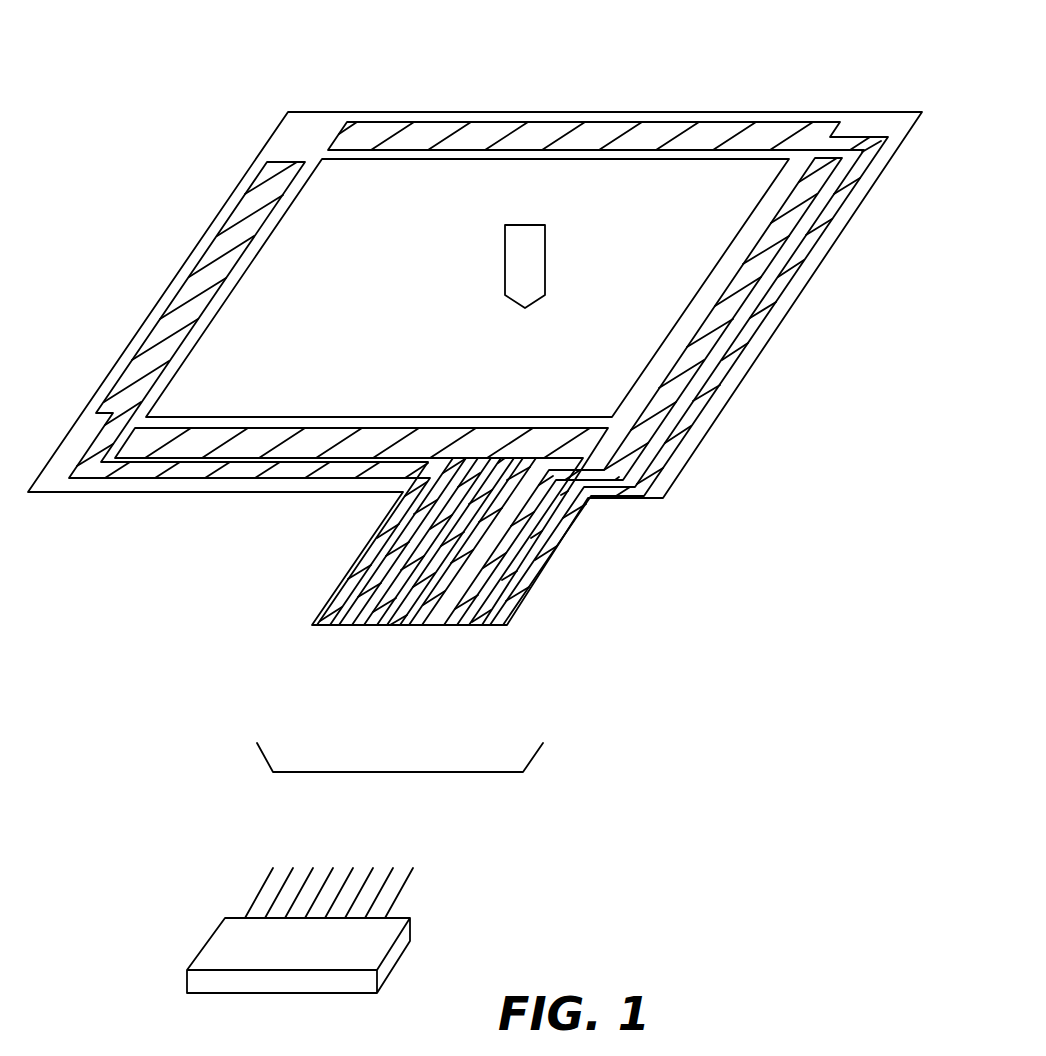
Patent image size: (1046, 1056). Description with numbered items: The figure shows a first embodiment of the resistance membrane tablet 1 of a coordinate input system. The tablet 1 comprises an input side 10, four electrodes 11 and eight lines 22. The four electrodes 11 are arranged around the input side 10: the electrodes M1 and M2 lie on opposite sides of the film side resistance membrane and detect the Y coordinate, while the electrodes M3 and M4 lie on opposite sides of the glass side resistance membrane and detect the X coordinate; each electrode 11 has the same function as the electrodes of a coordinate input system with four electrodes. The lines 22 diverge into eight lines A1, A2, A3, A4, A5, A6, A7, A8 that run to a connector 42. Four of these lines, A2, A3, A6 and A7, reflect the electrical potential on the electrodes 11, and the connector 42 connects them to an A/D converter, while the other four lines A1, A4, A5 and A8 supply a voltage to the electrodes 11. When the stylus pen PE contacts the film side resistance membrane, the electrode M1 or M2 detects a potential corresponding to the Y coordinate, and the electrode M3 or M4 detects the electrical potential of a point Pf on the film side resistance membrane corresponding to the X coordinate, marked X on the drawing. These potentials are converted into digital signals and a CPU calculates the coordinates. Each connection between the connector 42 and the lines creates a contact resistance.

The resistance membrane tablet 1 is at (175, 533).
The input side 10 is at (288, 242).
The electrodes 11 is at (760, 340).
The lines 22 is at (390, 772).
The connector 42 is at (397, 950).
The electrode M1 is at (193, 290).
The electrode M2 is at (802, 223).
The electrode M3 is at (315, 445).
The electrode M4 is at (560, 125).
The line A1 is at (325, 627).
The line A2 is at (347, 627).
The line A3 is at (417, 627).
The line A4 is at (452, 627).
The line A5 is at (372, 627).
The line A6 is at (395, 627).
The line A7 is at (477, 627).
The line A8 is at (498, 627).
The stylus pen PE is at (546, 266).
The X coordinate X is at (523, 329).
The point Pf is at (569, 342).